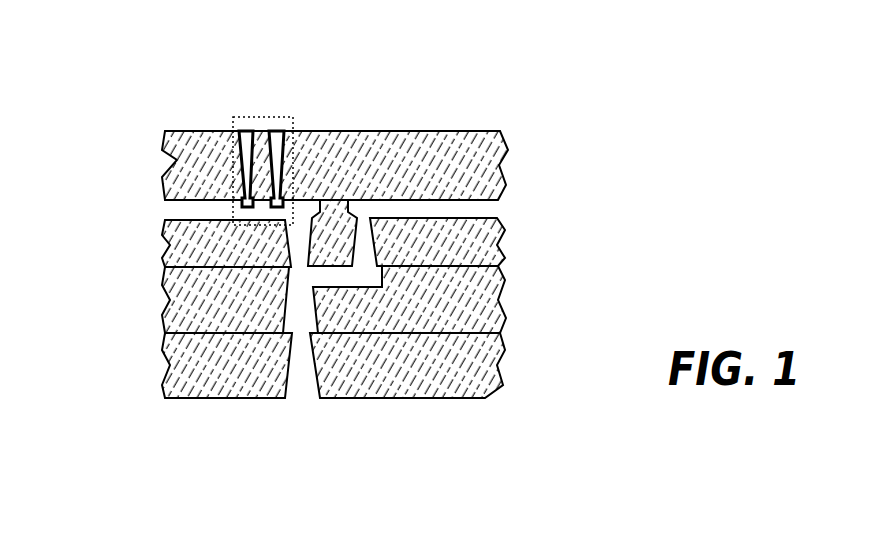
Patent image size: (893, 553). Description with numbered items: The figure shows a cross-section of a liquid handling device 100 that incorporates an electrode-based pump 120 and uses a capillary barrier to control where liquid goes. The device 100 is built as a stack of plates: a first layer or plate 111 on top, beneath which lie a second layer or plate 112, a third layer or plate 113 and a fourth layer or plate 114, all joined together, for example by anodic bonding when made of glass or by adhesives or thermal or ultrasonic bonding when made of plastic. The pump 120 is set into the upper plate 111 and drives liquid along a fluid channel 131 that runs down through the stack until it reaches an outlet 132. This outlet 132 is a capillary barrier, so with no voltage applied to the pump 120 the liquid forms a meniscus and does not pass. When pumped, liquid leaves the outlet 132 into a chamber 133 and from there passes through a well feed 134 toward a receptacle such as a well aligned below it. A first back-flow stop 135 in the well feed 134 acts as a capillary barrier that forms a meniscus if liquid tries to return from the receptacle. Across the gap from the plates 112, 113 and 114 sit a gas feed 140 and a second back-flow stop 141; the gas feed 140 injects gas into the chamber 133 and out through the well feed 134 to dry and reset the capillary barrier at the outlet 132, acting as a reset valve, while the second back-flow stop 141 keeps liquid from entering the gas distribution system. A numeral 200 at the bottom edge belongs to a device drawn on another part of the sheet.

The liquid handling device 100 is at (188, 100).
The first layer or plate 111 is at (177, 161).
The second layer or plate 112 is at (187, 253).
The third layer or plate 113 is at (173, 318).
The fourth layer or plate 114 is at (181, 377).
The electrode-based pump 120 is at (293, 158).
The fluid channel 131 is at (220, 207).
The outlet 132 is at (300, 261).
The chamber 133 is at (286, 278).
The well feed 134 is at (302, 308).
The first back-flow stop 135 is at (298, 357).
The gas feed 140 is at (403, 209).
The second back-flow stop 141 is at (400, 257).
The device of FIG. 2 200 is at (186, 547).